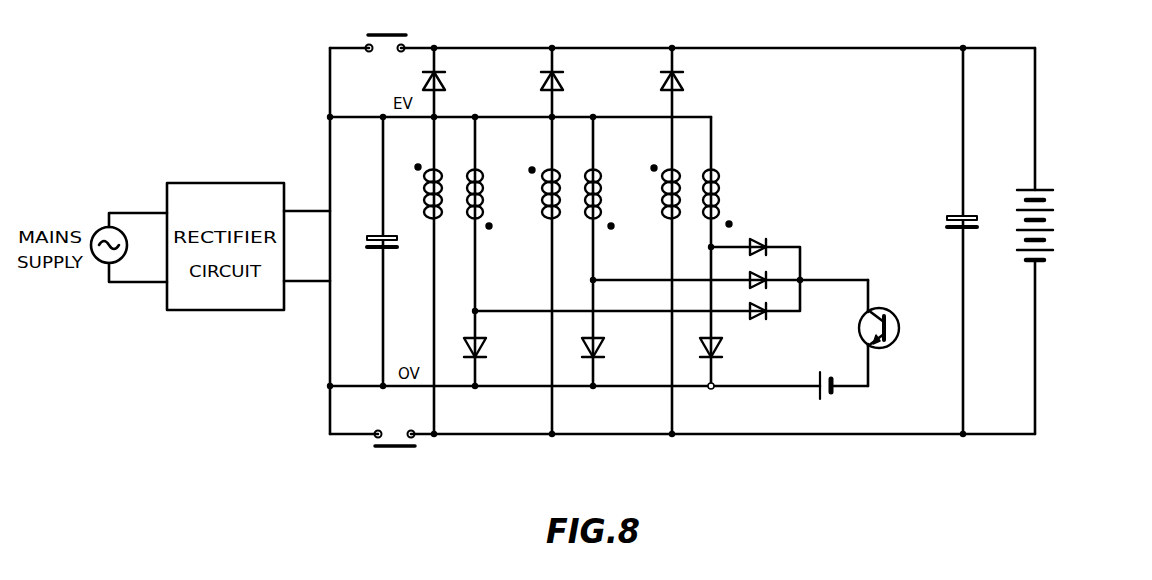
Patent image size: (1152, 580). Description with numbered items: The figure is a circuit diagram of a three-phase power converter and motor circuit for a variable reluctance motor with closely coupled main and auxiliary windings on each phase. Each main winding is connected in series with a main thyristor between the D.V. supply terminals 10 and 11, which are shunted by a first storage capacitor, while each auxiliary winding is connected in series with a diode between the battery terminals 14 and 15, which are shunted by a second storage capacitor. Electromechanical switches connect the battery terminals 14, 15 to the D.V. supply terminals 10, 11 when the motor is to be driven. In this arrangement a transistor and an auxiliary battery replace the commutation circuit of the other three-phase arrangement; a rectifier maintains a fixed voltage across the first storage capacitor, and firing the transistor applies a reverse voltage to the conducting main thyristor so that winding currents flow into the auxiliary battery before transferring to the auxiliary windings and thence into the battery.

The D.V. supply terminal 10 is at (505, 117).
The D.V. supply terminal 11 is at (503, 388).
The battery terminal 14 is at (497, 48).
The battery terminal 15 is at (503, 436).